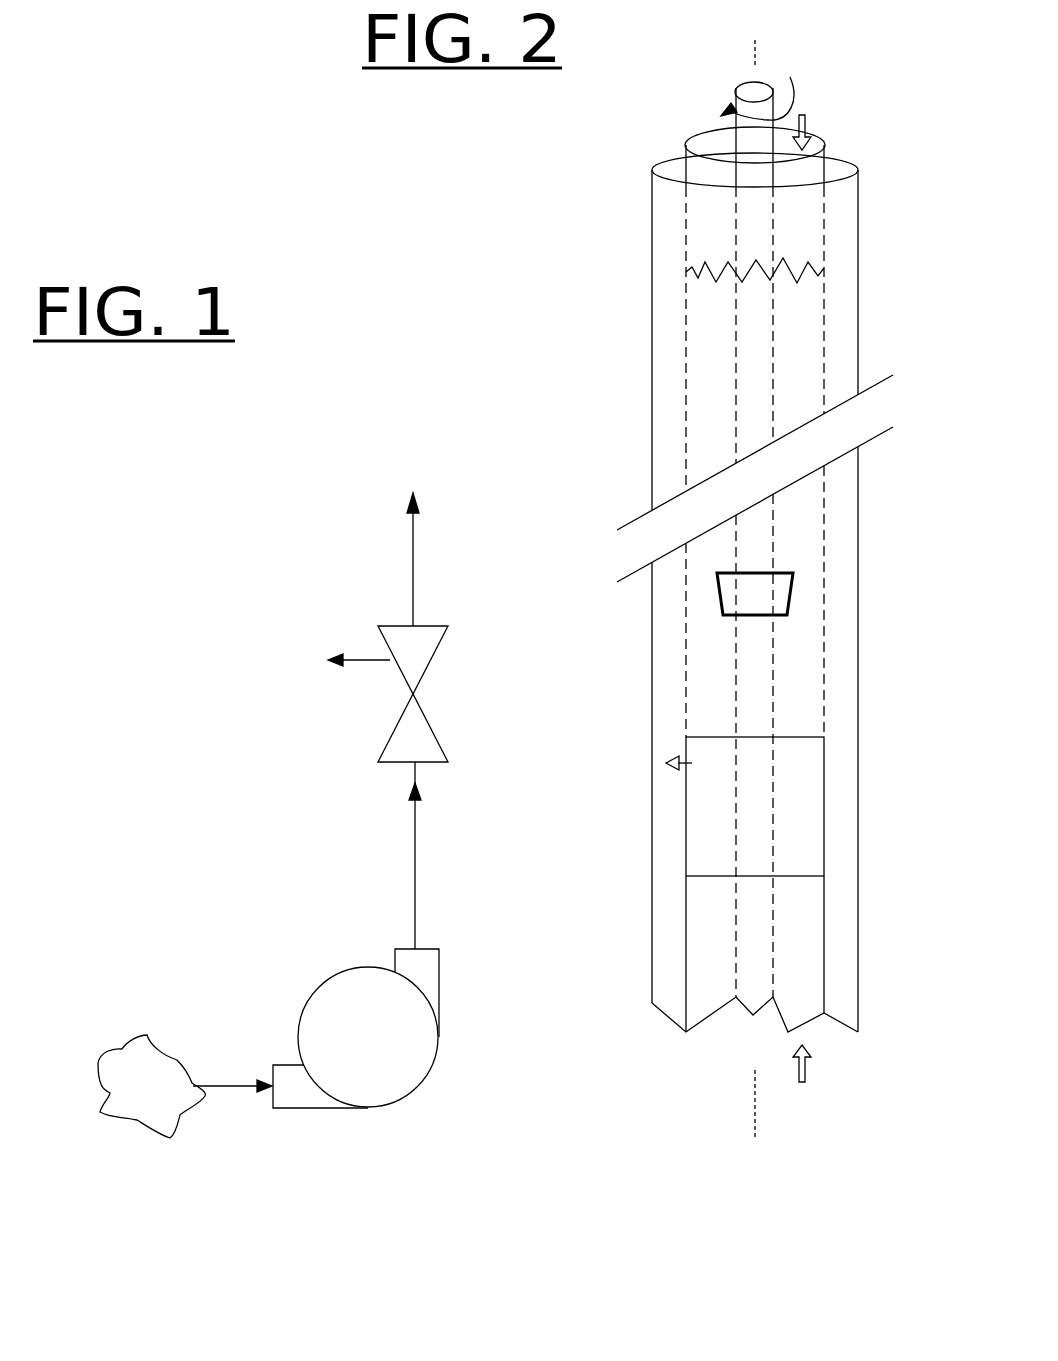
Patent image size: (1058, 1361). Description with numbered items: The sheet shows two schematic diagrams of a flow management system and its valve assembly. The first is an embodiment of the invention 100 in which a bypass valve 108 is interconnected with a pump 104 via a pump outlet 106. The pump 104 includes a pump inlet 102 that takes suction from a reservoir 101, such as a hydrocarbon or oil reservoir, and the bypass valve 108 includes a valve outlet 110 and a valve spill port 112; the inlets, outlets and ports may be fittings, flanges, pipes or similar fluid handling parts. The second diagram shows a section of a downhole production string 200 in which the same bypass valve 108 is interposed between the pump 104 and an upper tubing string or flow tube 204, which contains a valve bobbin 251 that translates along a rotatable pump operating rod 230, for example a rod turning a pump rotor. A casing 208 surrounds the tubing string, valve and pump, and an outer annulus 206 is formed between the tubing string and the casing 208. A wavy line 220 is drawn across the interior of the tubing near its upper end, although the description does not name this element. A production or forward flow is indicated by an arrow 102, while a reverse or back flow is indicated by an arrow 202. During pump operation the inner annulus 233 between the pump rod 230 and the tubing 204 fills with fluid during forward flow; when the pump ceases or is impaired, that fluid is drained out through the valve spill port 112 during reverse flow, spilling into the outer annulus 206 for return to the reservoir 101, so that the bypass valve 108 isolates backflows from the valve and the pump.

In FIG. 1, the embodiment of the invention 100 is at (203, 521).
In FIG. 1, the reservoir 101 is at (128, 1104).
In FIG. 1, the pump inlet 102 is at (233, 1084).
In FIG. 2, the pump inlet 102 is at (806, 1070).
In FIG. 1, the pump 104 is at (348, 1049).
In FIG. 2, the pump 104 is at (811, 925).
In FIG. 1, the pump outlet 106 is at (412, 857).
In FIG. 1, the bypass valve 108 is at (395, 650).
In FIG. 2, the bypass valve 108 is at (811, 787).
In FIG. 1, the valve outlet 110 is at (406, 547).
In FIG. 1, the valve spill port 112 is at (360, 660).
In FIG. 2, the valve spill port 112 is at (674, 766).
In FIG. 2, the downhole production string 200 is at (500, 235).
In FIG. 2, the arrow indicating reverse or back flow 202 is at (808, 127).
In FIG. 2, the upper tubing string or flow tube 204 is at (688, 298).
In FIG. 2, the annulus 206 is at (668, 358).
In FIG. 2, the casing 208 is at (651, 465).
In FIG. 2, the fluid level 220 is at (801, 265).
In FIG. 2, the rotatable pump operating rod 230 is at (774, 368).
In FIG. 2, the annulus between the pump rod and the tubing 233 is at (720, 652).
In FIG. 2, the valve bobbin 251 is at (791, 600).